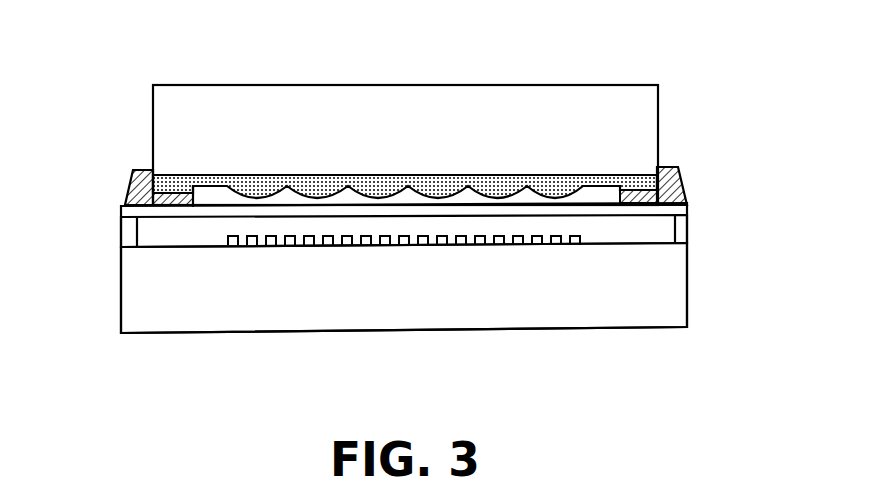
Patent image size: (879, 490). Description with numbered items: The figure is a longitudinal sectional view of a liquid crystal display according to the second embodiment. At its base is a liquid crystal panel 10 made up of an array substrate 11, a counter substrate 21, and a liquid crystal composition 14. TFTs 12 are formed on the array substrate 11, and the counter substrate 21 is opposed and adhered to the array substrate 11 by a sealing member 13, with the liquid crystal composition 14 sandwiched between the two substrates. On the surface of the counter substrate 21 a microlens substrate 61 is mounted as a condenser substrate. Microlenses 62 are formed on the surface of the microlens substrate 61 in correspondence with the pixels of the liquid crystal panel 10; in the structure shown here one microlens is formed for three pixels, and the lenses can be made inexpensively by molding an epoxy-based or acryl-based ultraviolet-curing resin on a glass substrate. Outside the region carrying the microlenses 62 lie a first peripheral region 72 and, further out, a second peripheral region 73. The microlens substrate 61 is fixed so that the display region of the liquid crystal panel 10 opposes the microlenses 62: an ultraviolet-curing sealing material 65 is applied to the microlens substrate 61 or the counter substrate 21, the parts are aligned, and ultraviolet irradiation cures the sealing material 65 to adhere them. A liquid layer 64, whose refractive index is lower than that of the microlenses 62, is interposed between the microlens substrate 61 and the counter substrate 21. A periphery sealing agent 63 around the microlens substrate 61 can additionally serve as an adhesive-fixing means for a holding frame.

The liquid crystal panel 10 is at (110, 203).
The array substrate 11 is at (120, 315).
The TFTs 12 is at (360, 247).
The sealing member 13 is at (120, 233).
The liquid crystal composition 14 is at (613, 233).
The counter substrate 21 is at (213, 212).
The microlens substrate 61 is at (587, 85).
The microlenses 62 is at (443, 187).
The periphery sealing agent 63 is at (680, 183).
The liquid layer 64 is at (617, 188).
The sealing material 65 is at (687, 233).
The first peripheral region 72 is at (620, 187).
The second peripheral region 73 is at (657, 168).